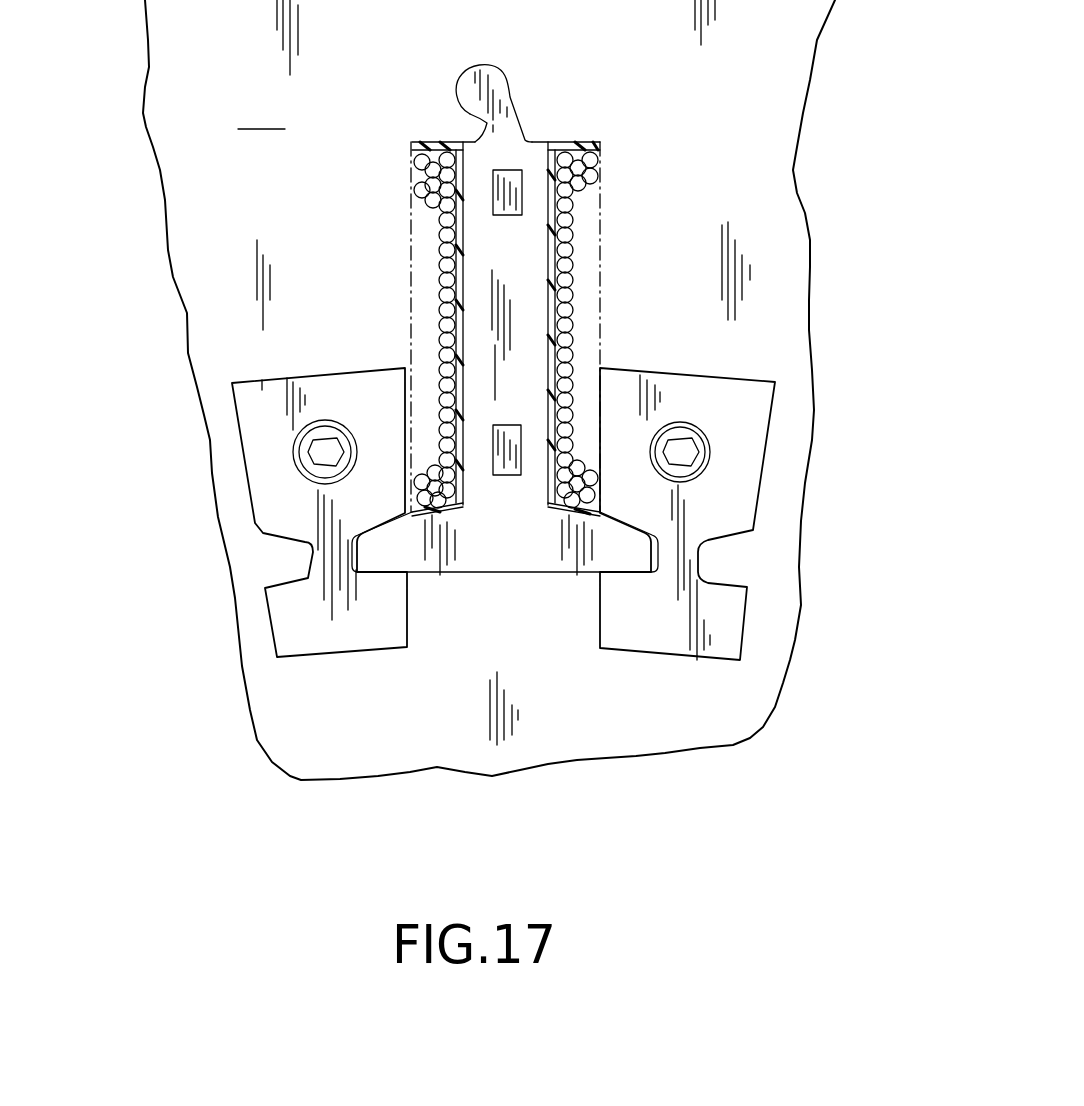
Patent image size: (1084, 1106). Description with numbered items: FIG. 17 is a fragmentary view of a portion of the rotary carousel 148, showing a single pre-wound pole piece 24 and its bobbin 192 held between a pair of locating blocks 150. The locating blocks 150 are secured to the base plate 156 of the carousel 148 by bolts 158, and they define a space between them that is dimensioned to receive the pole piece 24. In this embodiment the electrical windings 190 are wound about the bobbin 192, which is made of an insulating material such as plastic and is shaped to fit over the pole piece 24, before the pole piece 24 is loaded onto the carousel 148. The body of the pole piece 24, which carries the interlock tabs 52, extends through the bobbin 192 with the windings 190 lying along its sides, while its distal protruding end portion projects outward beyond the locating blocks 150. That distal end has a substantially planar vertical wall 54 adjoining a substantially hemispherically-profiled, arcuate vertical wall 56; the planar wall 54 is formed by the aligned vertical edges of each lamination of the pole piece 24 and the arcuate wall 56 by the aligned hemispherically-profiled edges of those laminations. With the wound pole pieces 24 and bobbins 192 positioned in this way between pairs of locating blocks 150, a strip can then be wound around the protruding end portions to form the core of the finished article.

The pole piece 24 is at (515, 254).
The interlock tabs 52 is at (510, 452).
The substantially planar vertical wall 54 is at (512, 97).
The hemispherically-profiled arcuate vertical wall 56 is at (457, 90).
The rotary carousel 148 is at (844, 230).
The locating blocks 150 is at (253, 408).
The base plate 156 is at (489, 390).
The bolts 158 is at (325, 455).
The electrical windings 190 is at (440, 227).
The bobbin 192 is at (578, 143).